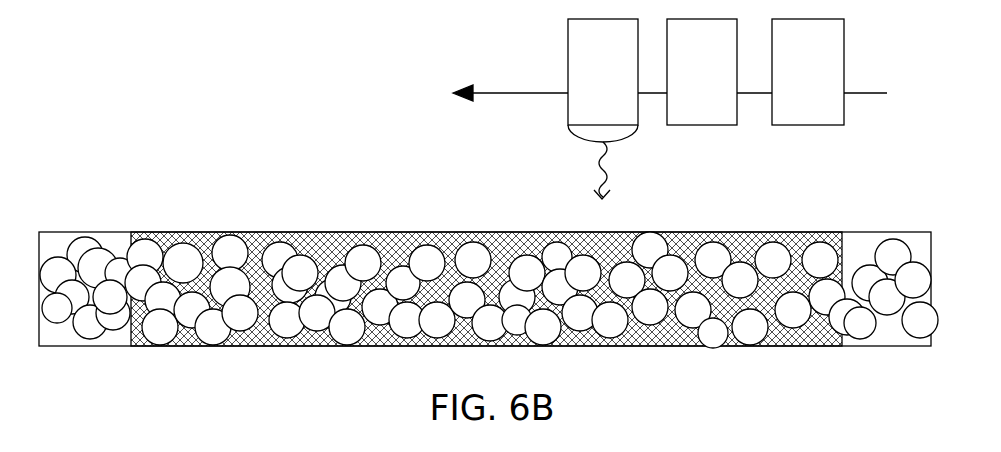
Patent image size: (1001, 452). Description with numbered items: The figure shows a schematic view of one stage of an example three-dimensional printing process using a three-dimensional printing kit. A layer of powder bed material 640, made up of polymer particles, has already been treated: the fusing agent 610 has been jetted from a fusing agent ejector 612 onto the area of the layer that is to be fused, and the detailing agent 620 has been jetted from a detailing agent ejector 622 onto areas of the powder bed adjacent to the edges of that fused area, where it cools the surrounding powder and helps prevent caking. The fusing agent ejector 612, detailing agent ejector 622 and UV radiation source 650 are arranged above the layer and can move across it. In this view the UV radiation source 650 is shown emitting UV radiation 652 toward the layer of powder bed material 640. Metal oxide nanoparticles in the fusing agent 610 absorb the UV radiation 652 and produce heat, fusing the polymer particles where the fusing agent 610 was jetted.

The fusing agent 610 is at (398, 237).
The fusing agent ejector 612 is at (787, 83).
The detailing agent 620 is at (118, 238).
The detailing agent ejector 622 is at (681, 83).
The powder bed material 640 is at (87, 250).
The UV radiation source 650 is at (582, 83).
The UV radiation 652 is at (590, 190).